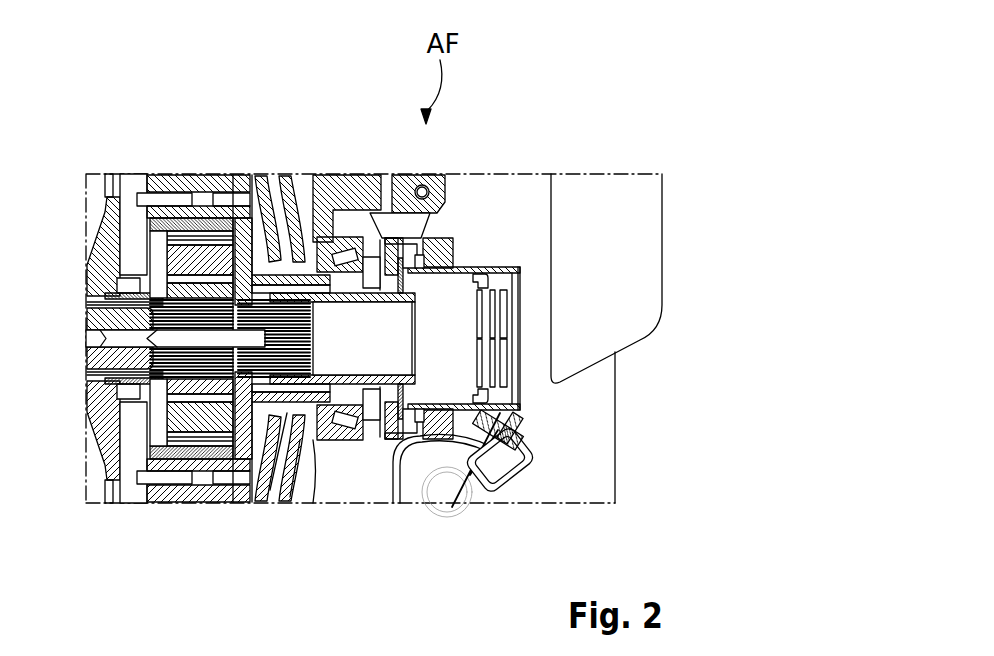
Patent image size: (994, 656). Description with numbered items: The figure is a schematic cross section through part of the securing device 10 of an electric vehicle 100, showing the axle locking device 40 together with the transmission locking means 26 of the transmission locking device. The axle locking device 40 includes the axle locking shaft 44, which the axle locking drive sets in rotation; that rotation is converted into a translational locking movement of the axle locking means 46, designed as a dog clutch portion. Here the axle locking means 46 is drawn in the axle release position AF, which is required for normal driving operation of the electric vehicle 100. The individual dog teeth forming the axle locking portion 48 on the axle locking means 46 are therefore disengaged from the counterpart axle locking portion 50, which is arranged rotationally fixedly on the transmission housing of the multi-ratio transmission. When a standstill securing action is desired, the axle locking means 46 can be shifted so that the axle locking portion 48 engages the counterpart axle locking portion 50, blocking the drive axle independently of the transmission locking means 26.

The electric vehicle 100 is at (581, 93).
The securing device 10 is at (327, 541).
The transmission locking means 26 is at (288, 186).
The axle locking portion 48 is at (388, 238).
The counterpart axle locking portion 50 is at (425, 240).
The axle locking means 46 is at (372, 432).
The axle locking device 40 is at (488, 508).
The axle locking shaft 44 is at (476, 424).